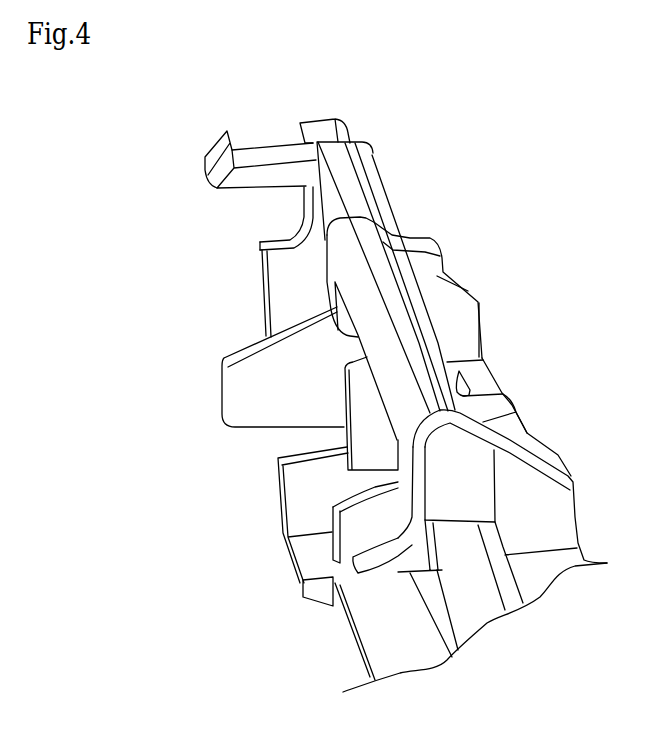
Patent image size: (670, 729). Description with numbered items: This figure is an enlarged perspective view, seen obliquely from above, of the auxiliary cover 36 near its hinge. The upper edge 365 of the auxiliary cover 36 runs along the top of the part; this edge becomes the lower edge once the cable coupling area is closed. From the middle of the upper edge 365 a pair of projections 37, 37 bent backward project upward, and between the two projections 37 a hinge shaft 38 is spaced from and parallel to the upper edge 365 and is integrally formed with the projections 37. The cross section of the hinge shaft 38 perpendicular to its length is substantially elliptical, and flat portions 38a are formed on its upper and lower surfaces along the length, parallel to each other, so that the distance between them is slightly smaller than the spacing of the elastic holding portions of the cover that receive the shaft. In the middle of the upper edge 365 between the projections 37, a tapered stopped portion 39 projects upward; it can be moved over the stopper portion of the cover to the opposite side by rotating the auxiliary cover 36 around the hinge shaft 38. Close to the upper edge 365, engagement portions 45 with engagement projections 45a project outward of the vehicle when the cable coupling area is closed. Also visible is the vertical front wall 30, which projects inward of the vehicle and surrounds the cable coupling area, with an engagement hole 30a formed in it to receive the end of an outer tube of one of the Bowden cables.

The engagement portion 45 is at (262, 142).
The engagement projection 45a is at (215, 150).
The upper edge 365 is at (352, 185).
The engagement hole 30a is at (272, 243).
The front wall 30 is at (262, 294).
The projection 37 is at (430, 258).
The flat portion 38a is at (409, 335).
The hinge shaft 38 is at (368, 397).
The stopped portion 39 is at (479, 390).
The auxiliary cover 36 is at (290, 604).